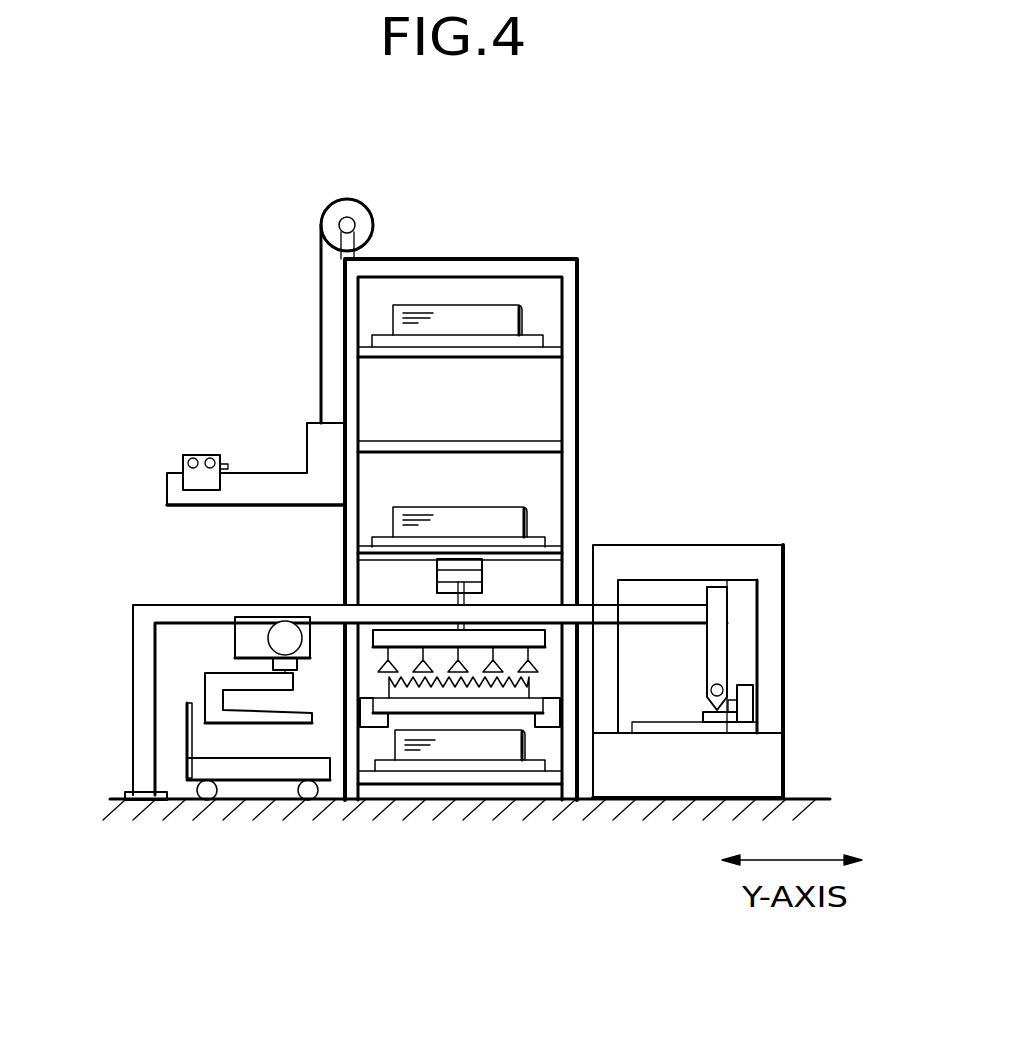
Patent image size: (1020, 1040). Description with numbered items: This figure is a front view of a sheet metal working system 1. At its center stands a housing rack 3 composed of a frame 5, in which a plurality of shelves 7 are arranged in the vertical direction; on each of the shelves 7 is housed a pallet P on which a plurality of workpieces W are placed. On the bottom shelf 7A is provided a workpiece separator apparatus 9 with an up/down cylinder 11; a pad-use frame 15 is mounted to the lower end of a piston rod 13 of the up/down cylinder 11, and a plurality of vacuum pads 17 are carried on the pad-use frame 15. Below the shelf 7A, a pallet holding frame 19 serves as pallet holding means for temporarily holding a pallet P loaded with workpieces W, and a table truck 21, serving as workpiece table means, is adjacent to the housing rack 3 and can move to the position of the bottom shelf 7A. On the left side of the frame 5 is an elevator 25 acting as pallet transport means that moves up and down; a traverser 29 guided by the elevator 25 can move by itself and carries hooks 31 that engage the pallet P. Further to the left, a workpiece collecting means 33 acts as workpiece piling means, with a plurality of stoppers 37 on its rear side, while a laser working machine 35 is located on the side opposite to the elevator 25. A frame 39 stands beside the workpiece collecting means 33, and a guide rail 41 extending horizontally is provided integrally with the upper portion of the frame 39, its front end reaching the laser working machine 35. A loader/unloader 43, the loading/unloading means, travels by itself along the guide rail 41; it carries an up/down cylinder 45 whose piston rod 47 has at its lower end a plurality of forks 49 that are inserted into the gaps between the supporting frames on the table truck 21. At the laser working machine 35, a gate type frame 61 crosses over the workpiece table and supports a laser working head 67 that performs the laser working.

The sheet metal working system 1 is at (627, 262).
The housing rack 3 is at (627, 352).
The frame 5 is at (577, 401).
The shelves 7 is at (432, 355).
The bottom shelf 7A is at (555, 548).
The workpiece separator apparatus 9 is at (553, 639).
The up/down cylinder 11 is at (437, 575).
The piston rod 13 is at (465, 600).
The pad-use frame 15 is at (375, 635).
The vacuum pads 17 is at (381, 670).
The pallet holding frame 19 is at (413, 778).
The table truck 21 is at (510, 703).
The elevator 25 is at (267, 497).
The traverser 29 is at (193, 455).
The hooks 31 is at (226, 463).
The workpiece collecting means 33 is at (258, 772).
The laser working machine 35 is at (795, 617).
The stoppers 37 is at (187, 760).
The frame 39 is at (133, 720).
The guide rail 41 is at (713, 605).
The loader/unloader 43 is at (200, 610).
The up/down cylinder 45 is at (243, 660).
The piston rod 47 is at (267, 670).
The forks 49 is at (270, 716).
The gate type frame 61 is at (772, 683).
The laser working head 67 is at (703, 658).
The workpieces W is at (440, 305).
The pallet P is at (533, 342).